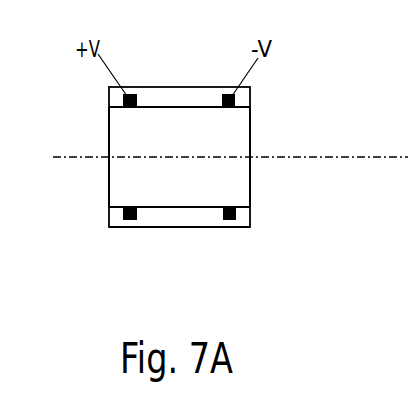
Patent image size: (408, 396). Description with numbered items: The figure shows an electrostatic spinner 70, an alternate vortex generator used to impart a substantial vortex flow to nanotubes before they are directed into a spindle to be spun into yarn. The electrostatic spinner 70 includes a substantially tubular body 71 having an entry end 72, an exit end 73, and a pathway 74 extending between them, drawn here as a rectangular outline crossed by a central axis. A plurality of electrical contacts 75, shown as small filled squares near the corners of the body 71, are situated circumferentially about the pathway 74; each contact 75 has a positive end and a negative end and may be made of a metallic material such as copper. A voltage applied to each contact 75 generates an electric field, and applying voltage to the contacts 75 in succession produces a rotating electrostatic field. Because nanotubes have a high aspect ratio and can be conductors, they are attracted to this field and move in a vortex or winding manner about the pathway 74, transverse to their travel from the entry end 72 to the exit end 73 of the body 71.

The electrostatic spinner 70 is at (282, 82).
The tubular body 71 is at (243, 217).
The entry end 72 is at (108, 182).
The exit end 73 is at (251, 183).
The pathway 74 is at (187, 147).
The electrical contacts 75 is at (128, 221).